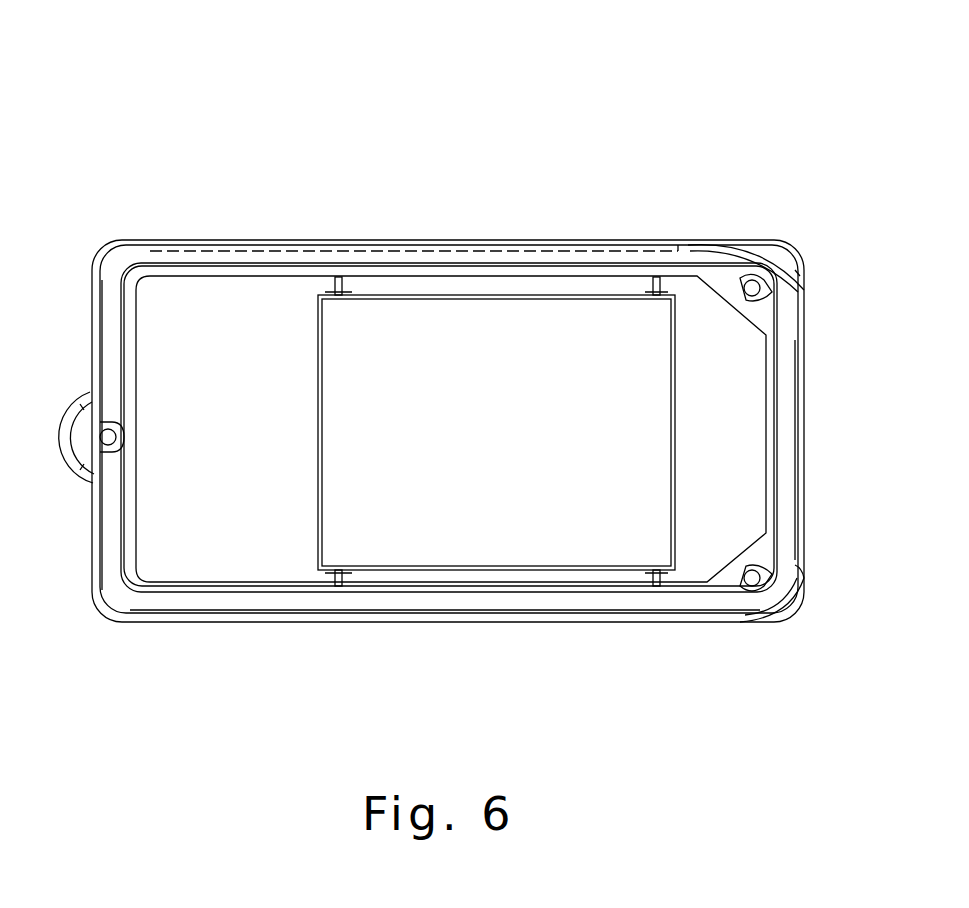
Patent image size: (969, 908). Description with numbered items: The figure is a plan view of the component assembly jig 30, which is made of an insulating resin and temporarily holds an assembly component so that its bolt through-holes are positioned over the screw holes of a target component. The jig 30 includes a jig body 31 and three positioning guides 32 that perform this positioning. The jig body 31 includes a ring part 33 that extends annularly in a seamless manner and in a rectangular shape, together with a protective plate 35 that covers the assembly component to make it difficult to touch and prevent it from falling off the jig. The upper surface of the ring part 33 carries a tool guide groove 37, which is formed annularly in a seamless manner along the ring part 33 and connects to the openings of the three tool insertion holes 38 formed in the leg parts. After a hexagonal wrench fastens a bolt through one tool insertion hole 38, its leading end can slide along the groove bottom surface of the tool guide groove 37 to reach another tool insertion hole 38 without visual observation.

The component assembly jig 30 is at (90, 72).
The jig body 31 is at (385, 240).
The positioning guide 32 is at (790, 262).
The ring part 33 is at (612, 250).
The protective plate 35 is at (458, 520).
The tool guide groove 37 is at (230, 265).
The tool insertion hole 38 is at (118, 437).